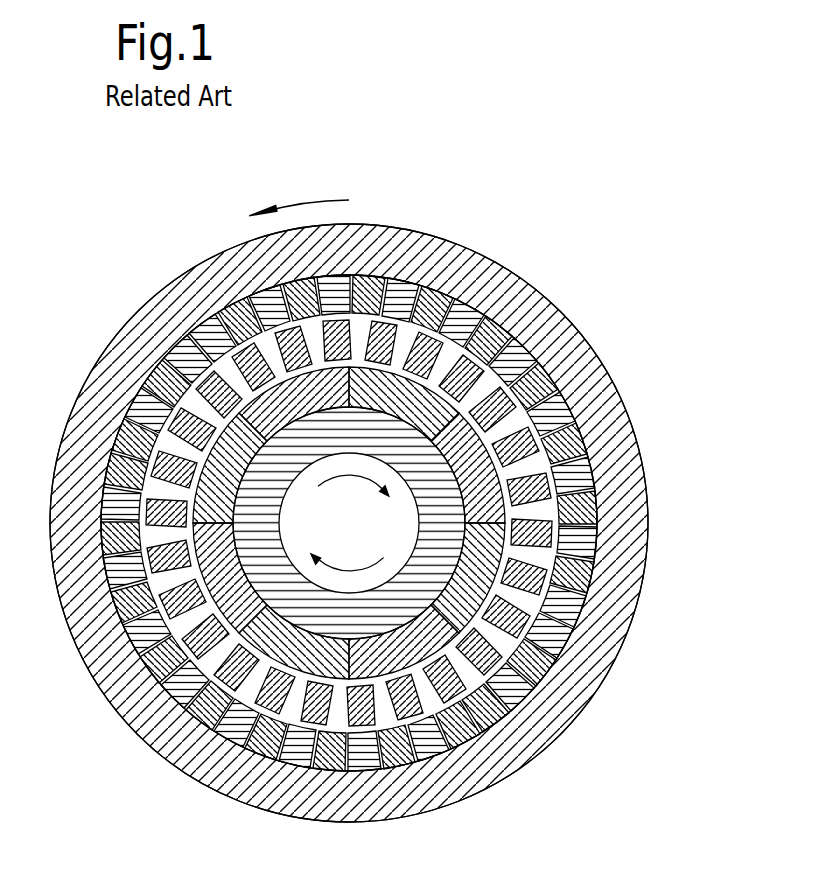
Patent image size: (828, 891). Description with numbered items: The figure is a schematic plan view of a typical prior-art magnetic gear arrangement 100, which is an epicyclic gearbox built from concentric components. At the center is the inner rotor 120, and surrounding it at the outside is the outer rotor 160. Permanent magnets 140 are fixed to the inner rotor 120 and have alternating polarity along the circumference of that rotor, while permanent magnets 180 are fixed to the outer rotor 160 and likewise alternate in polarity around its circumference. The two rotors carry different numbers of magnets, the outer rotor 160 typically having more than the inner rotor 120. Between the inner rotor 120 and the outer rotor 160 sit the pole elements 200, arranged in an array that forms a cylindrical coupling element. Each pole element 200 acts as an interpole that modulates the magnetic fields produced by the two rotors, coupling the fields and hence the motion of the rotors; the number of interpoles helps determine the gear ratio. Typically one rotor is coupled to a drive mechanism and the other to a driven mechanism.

The magnetic gear arrangement 100 is at (553, 235).
The inner rotor 120 is at (267, 577).
The permanent magnets 140 is at (372, 663).
The outer rotor 160 is at (163, 733).
The permanent magnets 180 is at (497, 731).
The pole elements 200 is at (572, 601).